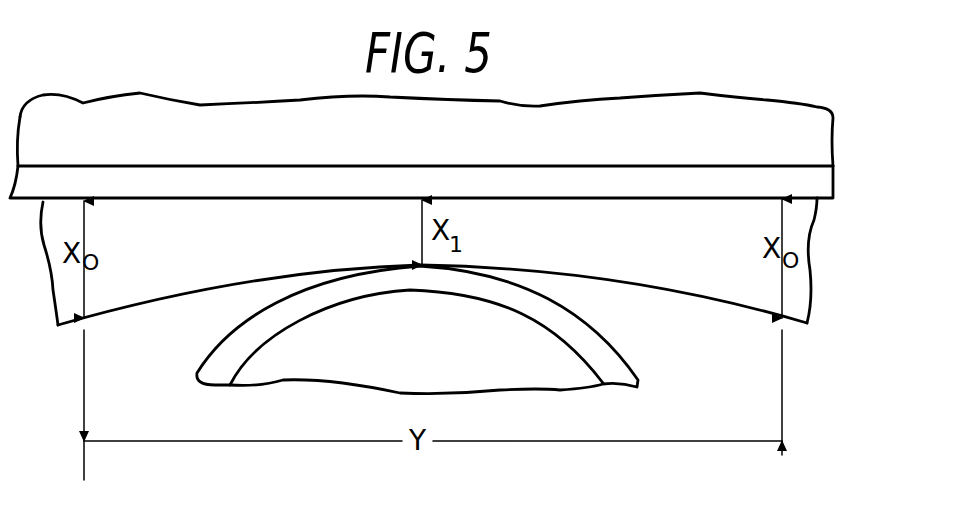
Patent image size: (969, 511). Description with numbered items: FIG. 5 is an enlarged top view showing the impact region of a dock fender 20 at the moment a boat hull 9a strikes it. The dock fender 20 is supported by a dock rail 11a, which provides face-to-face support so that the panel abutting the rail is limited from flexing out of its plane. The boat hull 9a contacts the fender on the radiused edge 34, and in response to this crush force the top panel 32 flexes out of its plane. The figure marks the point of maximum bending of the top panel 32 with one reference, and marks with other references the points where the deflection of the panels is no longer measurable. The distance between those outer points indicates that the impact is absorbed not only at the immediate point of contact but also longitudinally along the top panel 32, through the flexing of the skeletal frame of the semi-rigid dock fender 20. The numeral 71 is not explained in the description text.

The upper plate 71 is at (520, 122).
The dock rail 11a is at (815, 173).
The dock fender 20 is at (143, 235).
The top panel 32 is at (147, 278).
The radiused edge 34 is at (429, 227).
The boat hull 9a is at (596, 329).